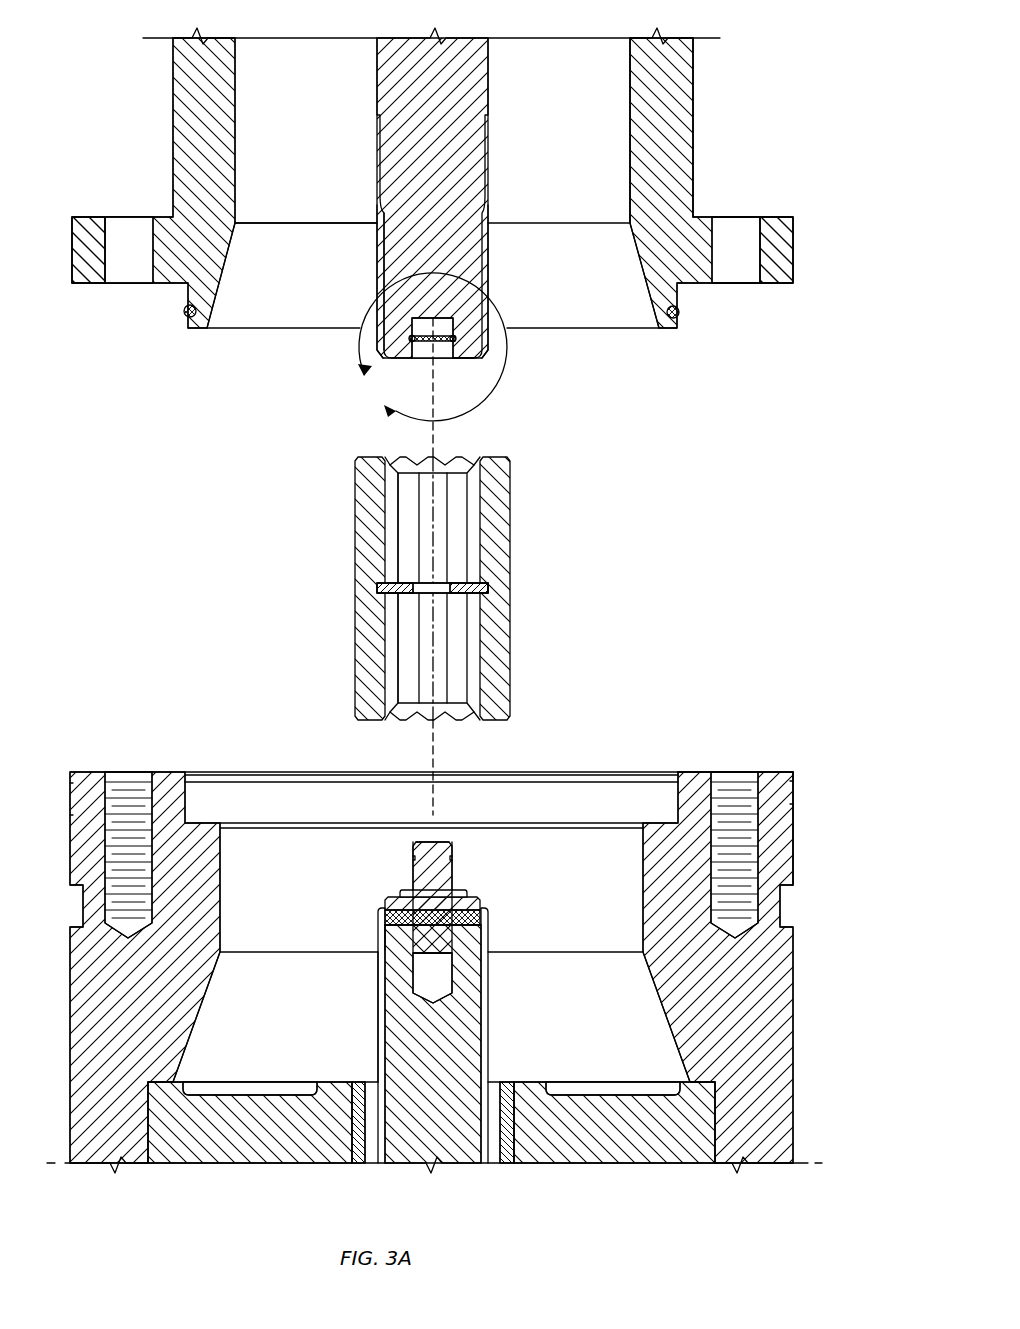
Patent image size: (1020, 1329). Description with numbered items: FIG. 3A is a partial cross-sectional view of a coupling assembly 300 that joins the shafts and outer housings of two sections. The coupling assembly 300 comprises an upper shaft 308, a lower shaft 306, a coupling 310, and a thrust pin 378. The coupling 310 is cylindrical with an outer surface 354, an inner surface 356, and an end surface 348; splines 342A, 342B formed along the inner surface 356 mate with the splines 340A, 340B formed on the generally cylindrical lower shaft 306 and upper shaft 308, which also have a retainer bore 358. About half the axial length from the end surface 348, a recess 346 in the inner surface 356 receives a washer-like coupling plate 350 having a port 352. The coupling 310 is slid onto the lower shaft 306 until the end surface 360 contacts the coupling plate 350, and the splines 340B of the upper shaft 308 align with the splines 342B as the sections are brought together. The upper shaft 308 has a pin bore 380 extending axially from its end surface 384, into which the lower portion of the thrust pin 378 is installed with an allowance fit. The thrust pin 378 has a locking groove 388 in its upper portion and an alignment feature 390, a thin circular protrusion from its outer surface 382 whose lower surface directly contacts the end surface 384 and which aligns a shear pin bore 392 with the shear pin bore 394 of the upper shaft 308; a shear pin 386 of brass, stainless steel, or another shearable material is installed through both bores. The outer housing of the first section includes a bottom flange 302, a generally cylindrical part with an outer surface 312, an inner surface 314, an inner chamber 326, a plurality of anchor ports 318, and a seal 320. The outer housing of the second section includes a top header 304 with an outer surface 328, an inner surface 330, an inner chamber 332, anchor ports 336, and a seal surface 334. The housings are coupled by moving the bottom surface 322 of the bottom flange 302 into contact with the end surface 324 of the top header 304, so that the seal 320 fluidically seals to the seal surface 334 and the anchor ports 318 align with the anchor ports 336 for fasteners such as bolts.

The coupling assembly 300 is at (461, 600).
The bottom flange 302 is at (673, 202).
The top header 304 is at (778, 872).
The lower shaft 306 is at (418, 147).
The upper shaft 308 is at (410, 1030).
The coupling 310 is at (513, 612).
The outer surface 312 is at (693, 78).
The inner surface 314 is at (618, 136).
The anchor ports 318 is at (740, 250).
The seal 320 is at (683, 310).
The bottom surface 322 is at (775, 283).
The end surface 324 is at (776, 772).
The inner chamber 326 is at (570, 185).
The outer surface 328 is at (793, 787).
The inner surface 330 is at (645, 880).
The inner chamber 332 is at (611, 928).
The seal surface 334 is at (679, 796).
The anchor ports 336 is at (746, 793).
The splines 340A is at (378, 270).
The splines 340B is at (377, 993).
The splines 342A is at (445, 528).
The splines 342B is at (445, 662).
The recess 346 is at (377, 588).
The end surface 348 is at (373, 717).
The coupling plate 350 is at (478, 588).
The port 352 is at (427, 594).
The outer surface 354 is at (355, 512).
The inner surface 356 is at (393, 533).
The retainer bore 358 is at (445, 327).
The end surface 360 is at (463, 362).
The thrust pin 378 is at (432, 880).
The pin bore 380 is at (455, 973).
The outer surface 382 is at (457, 872).
The end surface 384 is at (470, 898).
The shear pin 386 is at (390, 915).
The locking groove 388 is at (455, 858).
The alignment feature 390 is at (457, 890).
The shear pin bore 392 is at (437, 925).
The shear pin bore 394 is at (393, 930).